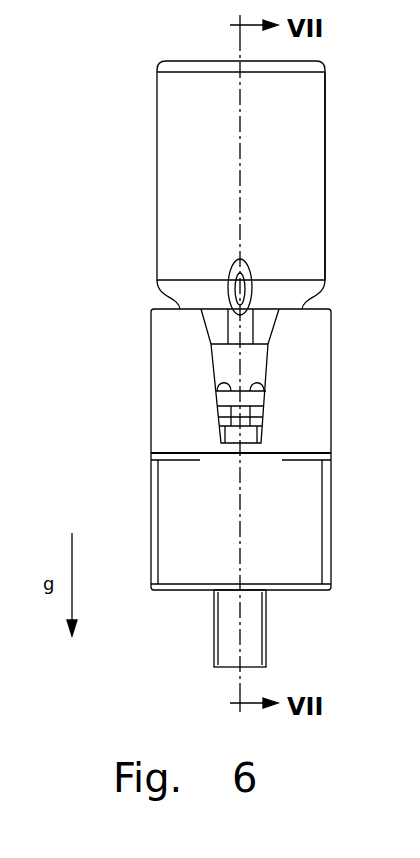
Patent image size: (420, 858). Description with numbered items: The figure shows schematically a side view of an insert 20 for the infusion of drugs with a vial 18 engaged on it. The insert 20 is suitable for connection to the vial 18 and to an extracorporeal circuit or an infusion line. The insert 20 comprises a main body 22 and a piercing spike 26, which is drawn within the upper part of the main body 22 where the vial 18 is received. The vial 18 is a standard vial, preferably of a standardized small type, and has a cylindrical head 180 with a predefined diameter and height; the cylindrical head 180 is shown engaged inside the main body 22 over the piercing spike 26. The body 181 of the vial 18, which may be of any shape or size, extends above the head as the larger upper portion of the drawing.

The insert 20 is at (100, 44).
The vial 18 is at (134, 199).
The body of the vial 181 is at (325, 113).
The piercing spike 26 is at (245, 292).
The main body 22 is at (151, 437).
The cylindrical head 180 is at (243, 403).